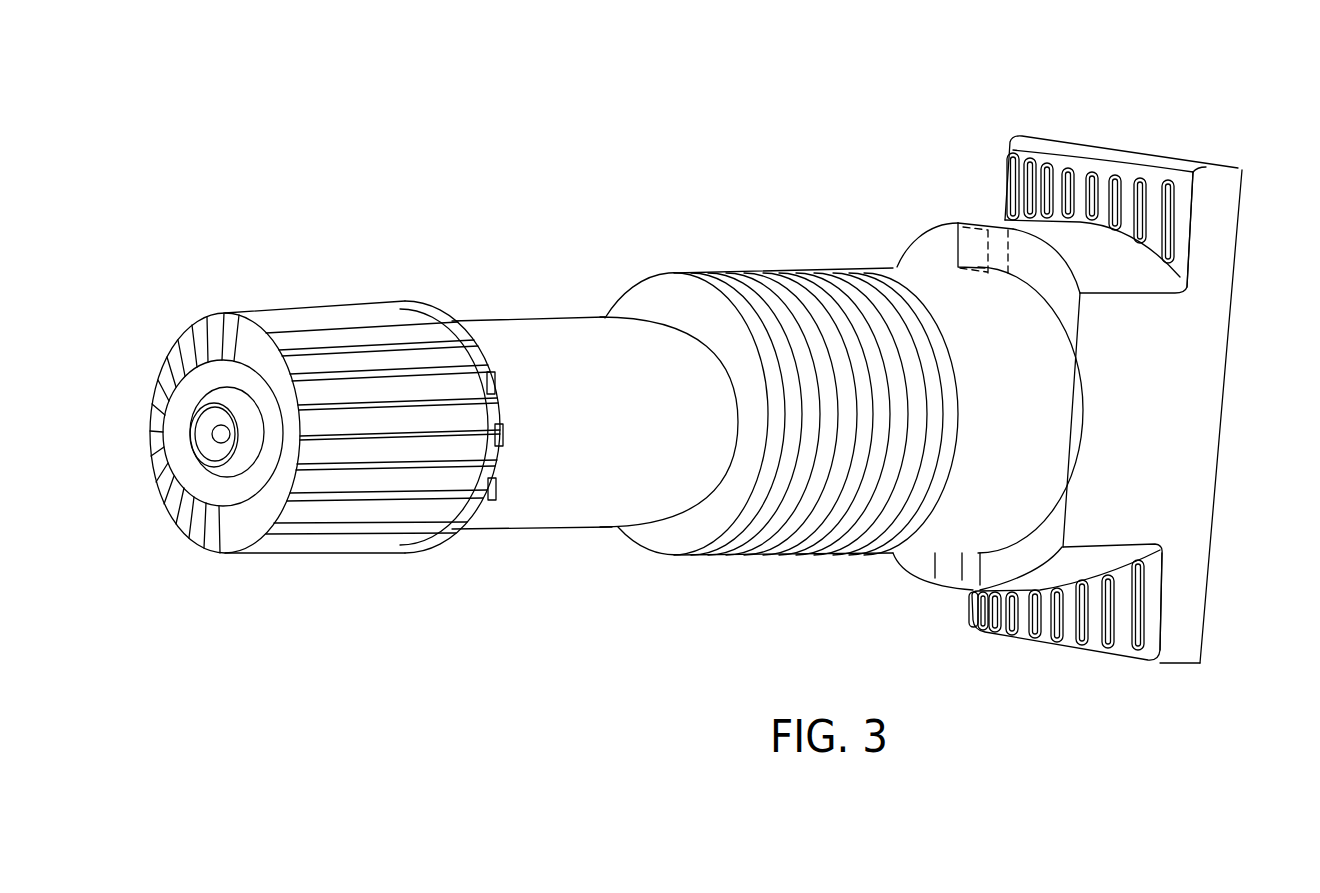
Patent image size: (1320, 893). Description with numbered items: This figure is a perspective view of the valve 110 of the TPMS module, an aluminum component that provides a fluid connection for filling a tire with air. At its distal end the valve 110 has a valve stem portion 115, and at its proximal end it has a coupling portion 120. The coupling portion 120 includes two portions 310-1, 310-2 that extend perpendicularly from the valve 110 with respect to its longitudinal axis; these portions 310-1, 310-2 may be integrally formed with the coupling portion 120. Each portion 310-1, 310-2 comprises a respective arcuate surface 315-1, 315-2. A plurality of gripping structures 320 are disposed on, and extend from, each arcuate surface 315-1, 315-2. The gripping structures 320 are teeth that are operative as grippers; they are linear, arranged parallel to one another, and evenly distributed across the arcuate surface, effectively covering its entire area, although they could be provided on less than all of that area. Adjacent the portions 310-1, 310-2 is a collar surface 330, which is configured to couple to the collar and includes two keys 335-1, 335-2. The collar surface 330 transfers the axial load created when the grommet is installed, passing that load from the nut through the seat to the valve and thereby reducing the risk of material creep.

The valve 110 is at (362, 186).
The valve stem portion 115 is at (418, 632).
The coupling portion 120 is at (1228, 95).
The portion 310-1 is at (1115, 718).
The portion 310-2 is at (1105, 133).
The arcuate surface 315-1 is at (1160, 635).
The arcuate surface 315-2 is at (1190, 248).
The gripping structures 320 is at (1008, 163).
The collar surface 330 is at (913, 254).
The key 335-1 is at (950, 577).
The key 335-2 is at (965, 238).